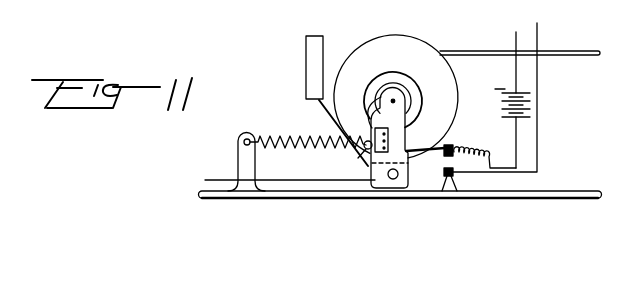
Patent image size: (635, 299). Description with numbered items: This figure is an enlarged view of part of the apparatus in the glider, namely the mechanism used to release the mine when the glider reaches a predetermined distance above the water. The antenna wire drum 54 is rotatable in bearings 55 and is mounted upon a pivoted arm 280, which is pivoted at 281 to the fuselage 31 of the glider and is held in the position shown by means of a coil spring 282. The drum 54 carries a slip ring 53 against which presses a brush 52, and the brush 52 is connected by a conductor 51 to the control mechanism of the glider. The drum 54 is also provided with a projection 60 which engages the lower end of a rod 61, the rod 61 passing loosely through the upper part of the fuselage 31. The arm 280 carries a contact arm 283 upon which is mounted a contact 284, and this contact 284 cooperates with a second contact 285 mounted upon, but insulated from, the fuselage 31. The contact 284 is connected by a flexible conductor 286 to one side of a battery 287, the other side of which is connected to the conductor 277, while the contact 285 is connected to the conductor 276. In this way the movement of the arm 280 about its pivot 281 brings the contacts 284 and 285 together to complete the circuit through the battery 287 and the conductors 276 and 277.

The fuselage 31 is at (334, 192).
The conductor 51 is at (215, 179).
The brush 52 is at (367, 110).
The slip ring 53 is at (386, 73).
The drum 54 is at (377, 42).
The bearings 55 is at (583, 56).
The projection 60 is at (325, 112).
The rod 61 is at (306, 50).
The conductor 276 is at (540, 32).
The conductor 277 is at (516, 36).
The pivoted arm 280 is at (408, 131).
The pivot 281 is at (393, 180).
The coil spring 282 is at (298, 149).
The contact arm 283 is at (452, 146).
The contact 284 is at (460, 174).
The second contact 285 is at (444, 172).
The flexible conductor 286 is at (471, 152).
The battery 287 is at (500, 106).